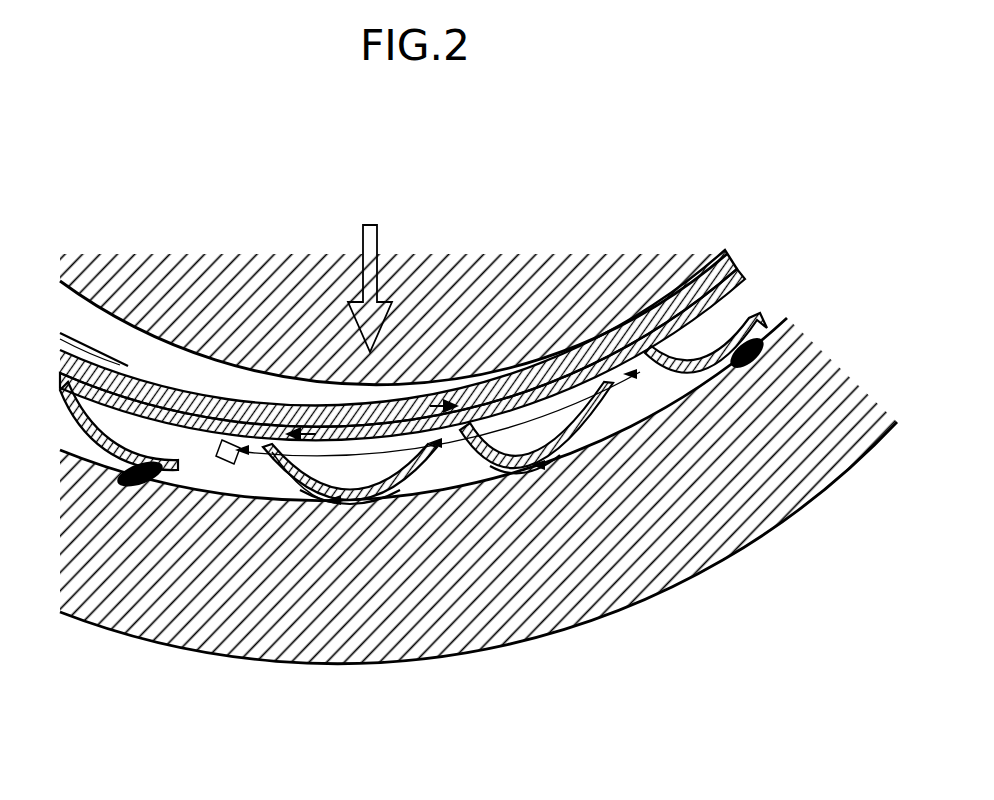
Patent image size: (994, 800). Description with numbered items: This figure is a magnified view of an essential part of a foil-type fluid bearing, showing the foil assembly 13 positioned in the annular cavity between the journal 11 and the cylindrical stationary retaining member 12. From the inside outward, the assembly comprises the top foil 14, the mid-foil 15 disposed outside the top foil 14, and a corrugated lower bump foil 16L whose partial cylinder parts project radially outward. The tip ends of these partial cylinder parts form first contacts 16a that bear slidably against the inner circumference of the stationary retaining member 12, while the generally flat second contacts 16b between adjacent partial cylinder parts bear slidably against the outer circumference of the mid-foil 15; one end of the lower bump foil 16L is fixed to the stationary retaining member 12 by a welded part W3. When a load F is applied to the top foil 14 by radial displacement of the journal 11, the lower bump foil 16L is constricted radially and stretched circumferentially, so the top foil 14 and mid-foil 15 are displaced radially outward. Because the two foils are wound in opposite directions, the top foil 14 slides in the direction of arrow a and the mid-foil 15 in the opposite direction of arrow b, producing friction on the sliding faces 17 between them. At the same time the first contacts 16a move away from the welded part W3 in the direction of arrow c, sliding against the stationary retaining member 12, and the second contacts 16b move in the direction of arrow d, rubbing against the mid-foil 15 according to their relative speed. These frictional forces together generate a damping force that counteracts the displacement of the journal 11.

The journal 11 is at (245, 280).
The stationary retaining member 12 is at (390, 623).
The foil assembly 13 is at (110, 340).
The top foil 14 is at (118, 370).
The mid-foil 15 is at (135, 405).
The first contacts 16a is at (353, 507).
The second contacts 16b is at (253, 417).
The lower bump foil 16L is at (432, 494).
The sliding faces 17 is at (267, 423).
The load F is at (370, 269).
The welded part W3 is at (747, 340).
The arrow a is at (403, 400).
The arrow b is at (352, 440).
The arrow c is at (350, 493).
The arrow d is at (258, 455).